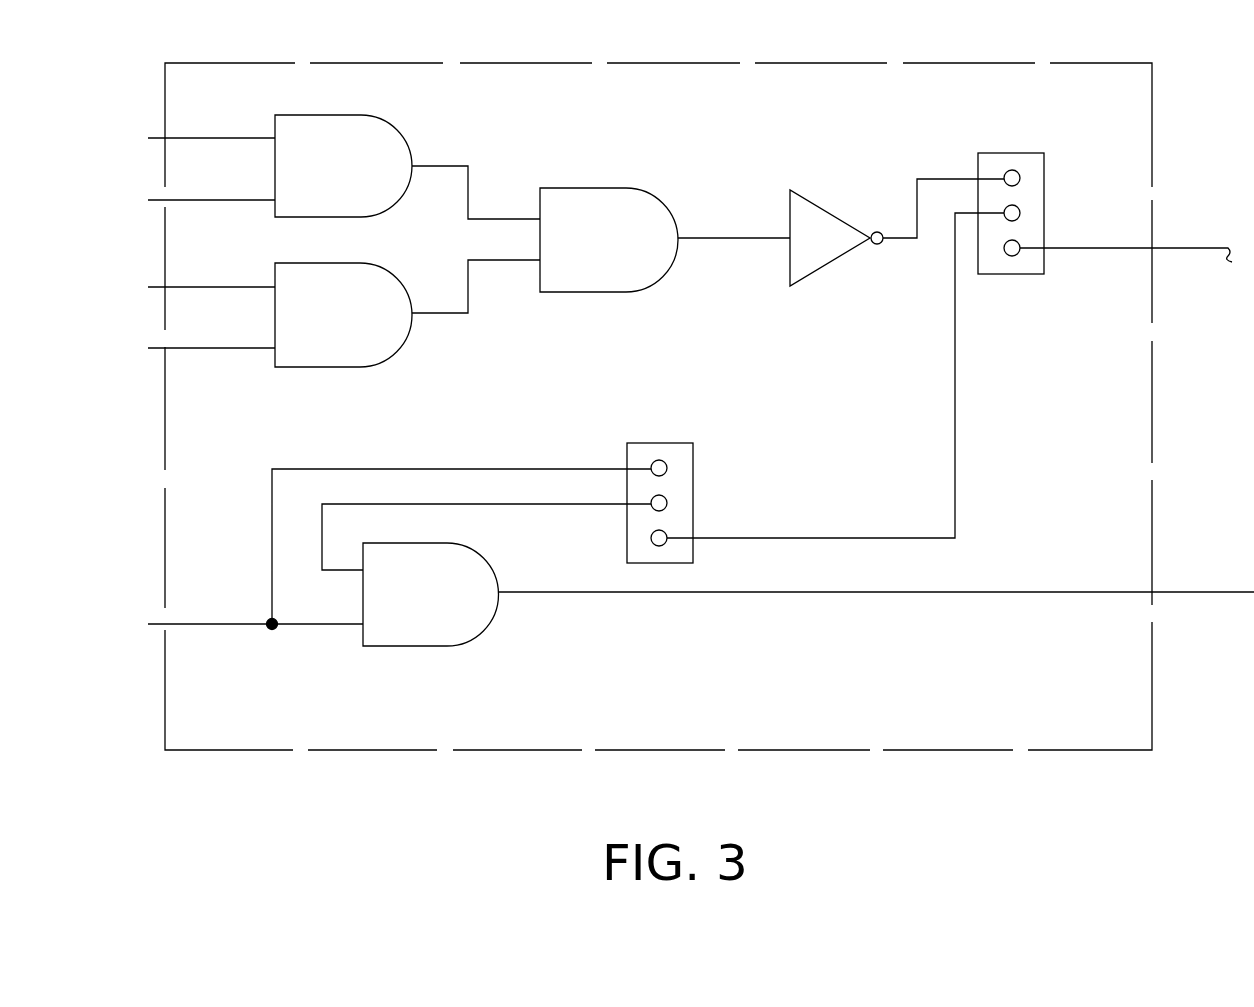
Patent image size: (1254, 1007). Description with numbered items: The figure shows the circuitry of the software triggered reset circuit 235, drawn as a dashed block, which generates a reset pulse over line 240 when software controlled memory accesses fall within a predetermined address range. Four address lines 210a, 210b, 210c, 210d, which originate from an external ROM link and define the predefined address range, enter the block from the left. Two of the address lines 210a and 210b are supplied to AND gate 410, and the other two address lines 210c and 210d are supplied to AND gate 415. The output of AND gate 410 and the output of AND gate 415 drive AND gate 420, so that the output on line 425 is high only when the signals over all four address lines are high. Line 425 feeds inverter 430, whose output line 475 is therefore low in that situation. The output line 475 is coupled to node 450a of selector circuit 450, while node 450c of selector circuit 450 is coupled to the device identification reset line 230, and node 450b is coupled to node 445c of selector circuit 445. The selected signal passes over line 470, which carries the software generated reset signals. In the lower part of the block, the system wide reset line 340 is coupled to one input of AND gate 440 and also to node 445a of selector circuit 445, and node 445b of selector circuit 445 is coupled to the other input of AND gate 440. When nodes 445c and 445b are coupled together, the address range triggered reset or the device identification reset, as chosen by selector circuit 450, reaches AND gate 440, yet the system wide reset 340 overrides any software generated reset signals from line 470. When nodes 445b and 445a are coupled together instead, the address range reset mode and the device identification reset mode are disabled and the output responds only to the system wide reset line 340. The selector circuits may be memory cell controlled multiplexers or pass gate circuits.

The address line 210a is at (221, 136).
The address line 210b is at (221, 198).
The address line 210c is at (221, 284).
The address line 210d is at (221, 346).
The device identification reset line 230 is at (1193, 245).
The software triggered reset circuit 235 is at (658, 406).
The line 240 is at (1212, 584).
The system wide reset line 340 is at (213, 623).
The AND gate 410 is at (407, 167).
The AND gate 415 is at (407, 313).
The AND gate 420 is at (609, 240).
The output line 425 is at (734, 236).
The inverter 430 is at (836, 238).
The AND gate 440 is at (431, 594).
The selector circuit 445 is at (669, 500).
The node 445a is at (667, 467).
The node 445b is at (667, 502).
The node 445c is at (665, 543).
The selector circuit 450 is at (1019, 211).
The node 450a is at (1020, 177).
The node 450b is at (1020, 212).
The node 450c is at (1018, 253).
The line 470 is at (891, 534).
The output line 475 is at (917, 190).